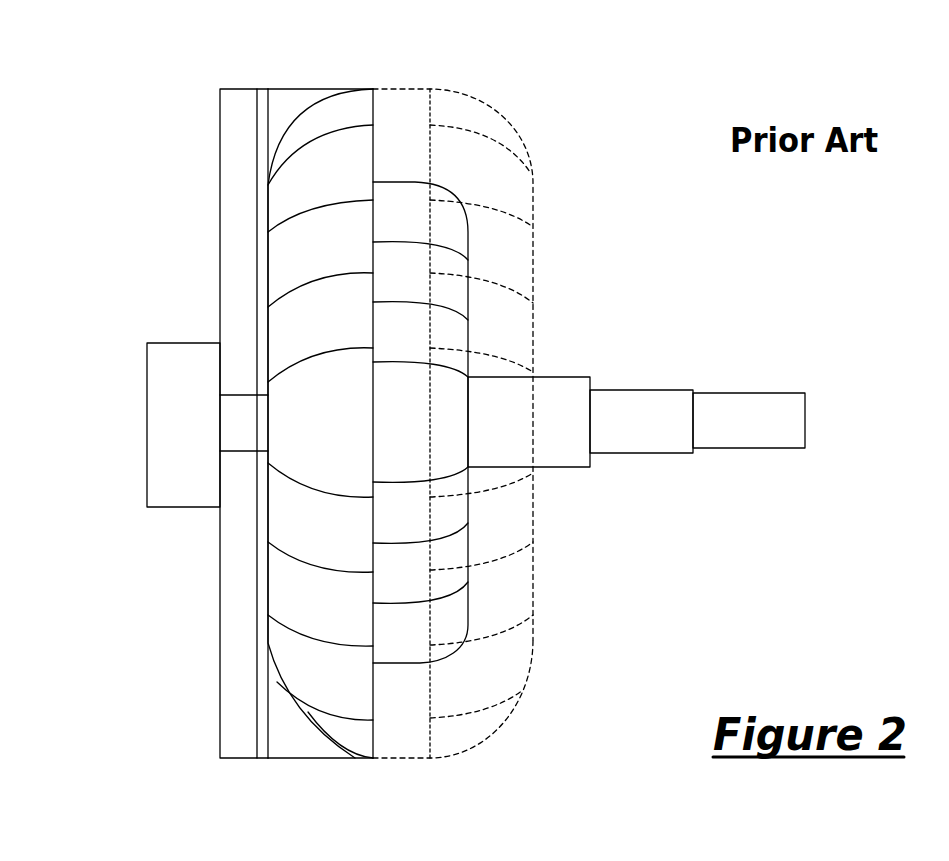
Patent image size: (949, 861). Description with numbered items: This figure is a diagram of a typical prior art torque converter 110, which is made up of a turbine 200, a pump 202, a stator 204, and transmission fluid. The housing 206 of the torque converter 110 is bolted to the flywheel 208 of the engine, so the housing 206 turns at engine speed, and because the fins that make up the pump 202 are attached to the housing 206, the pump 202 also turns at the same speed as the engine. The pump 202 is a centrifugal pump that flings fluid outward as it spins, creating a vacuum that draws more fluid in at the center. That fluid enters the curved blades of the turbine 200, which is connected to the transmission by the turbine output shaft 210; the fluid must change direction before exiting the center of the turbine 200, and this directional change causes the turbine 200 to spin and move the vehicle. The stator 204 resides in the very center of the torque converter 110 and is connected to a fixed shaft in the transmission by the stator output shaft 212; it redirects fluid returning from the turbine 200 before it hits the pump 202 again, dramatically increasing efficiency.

The torque converter 110 is at (556, 162).
The turbine 200 is at (307, 713).
The pump 202 is at (533, 640).
The stator 204 is at (398, 663).
The housing 206 is at (275, 88).
The flywheel 208 is at (240, 89).
The turbine output shaft 210 is at (758, 393).
The stator output shaft 212 is at (635, 390).